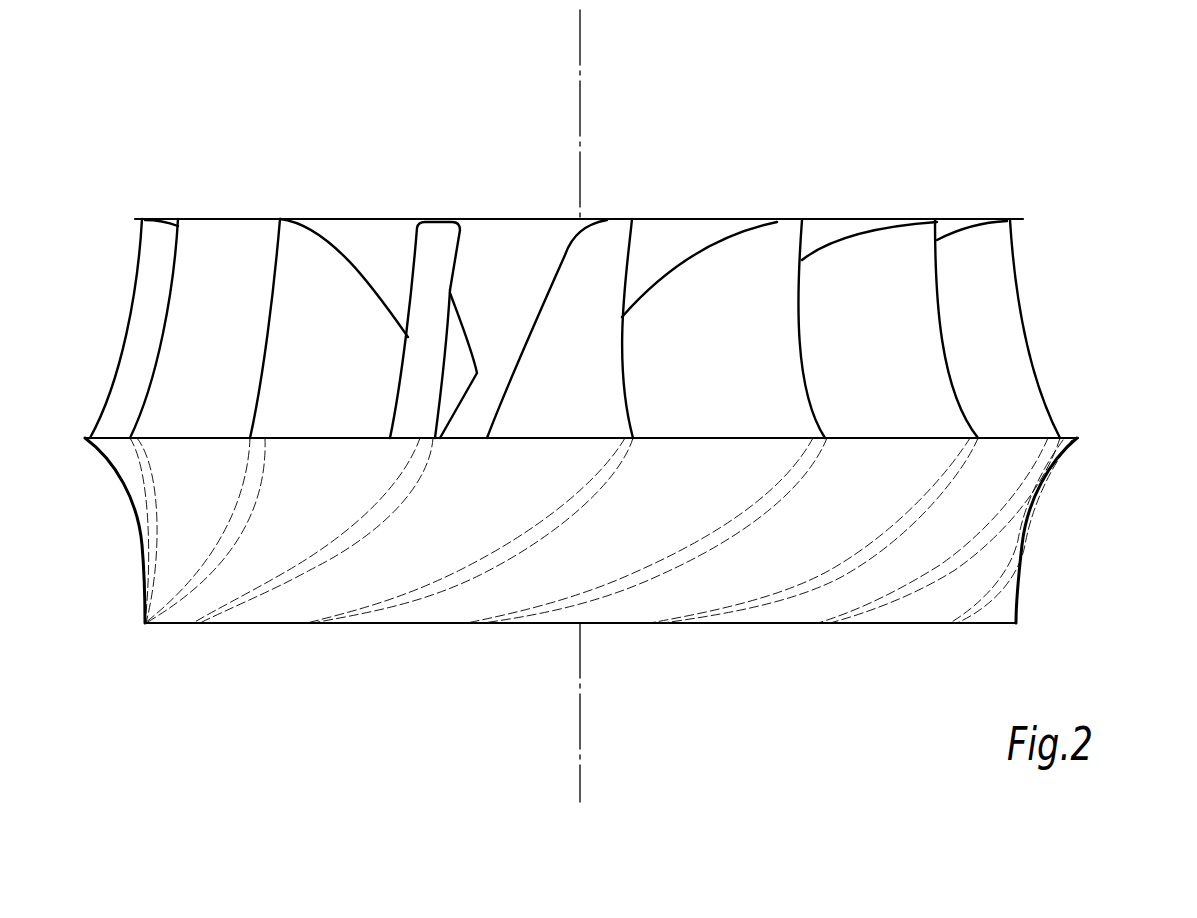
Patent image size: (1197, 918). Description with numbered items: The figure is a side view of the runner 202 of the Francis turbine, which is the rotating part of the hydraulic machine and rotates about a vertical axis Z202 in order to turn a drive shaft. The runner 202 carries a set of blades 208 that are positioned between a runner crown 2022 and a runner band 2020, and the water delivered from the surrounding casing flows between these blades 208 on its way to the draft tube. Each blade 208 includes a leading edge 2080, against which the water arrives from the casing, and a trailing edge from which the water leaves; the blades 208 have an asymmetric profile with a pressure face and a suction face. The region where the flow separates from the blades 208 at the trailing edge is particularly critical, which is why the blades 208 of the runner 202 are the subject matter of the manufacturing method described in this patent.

The runner 202 is at (767, 184).
The runner crown 2022 is at (343, 219).
The runner band 2020 is at (275, 623).
The blades 208 is at (733, 265).
The leading edge 2080 is at (800, 345).
The axis Z202 is at (603, 416).